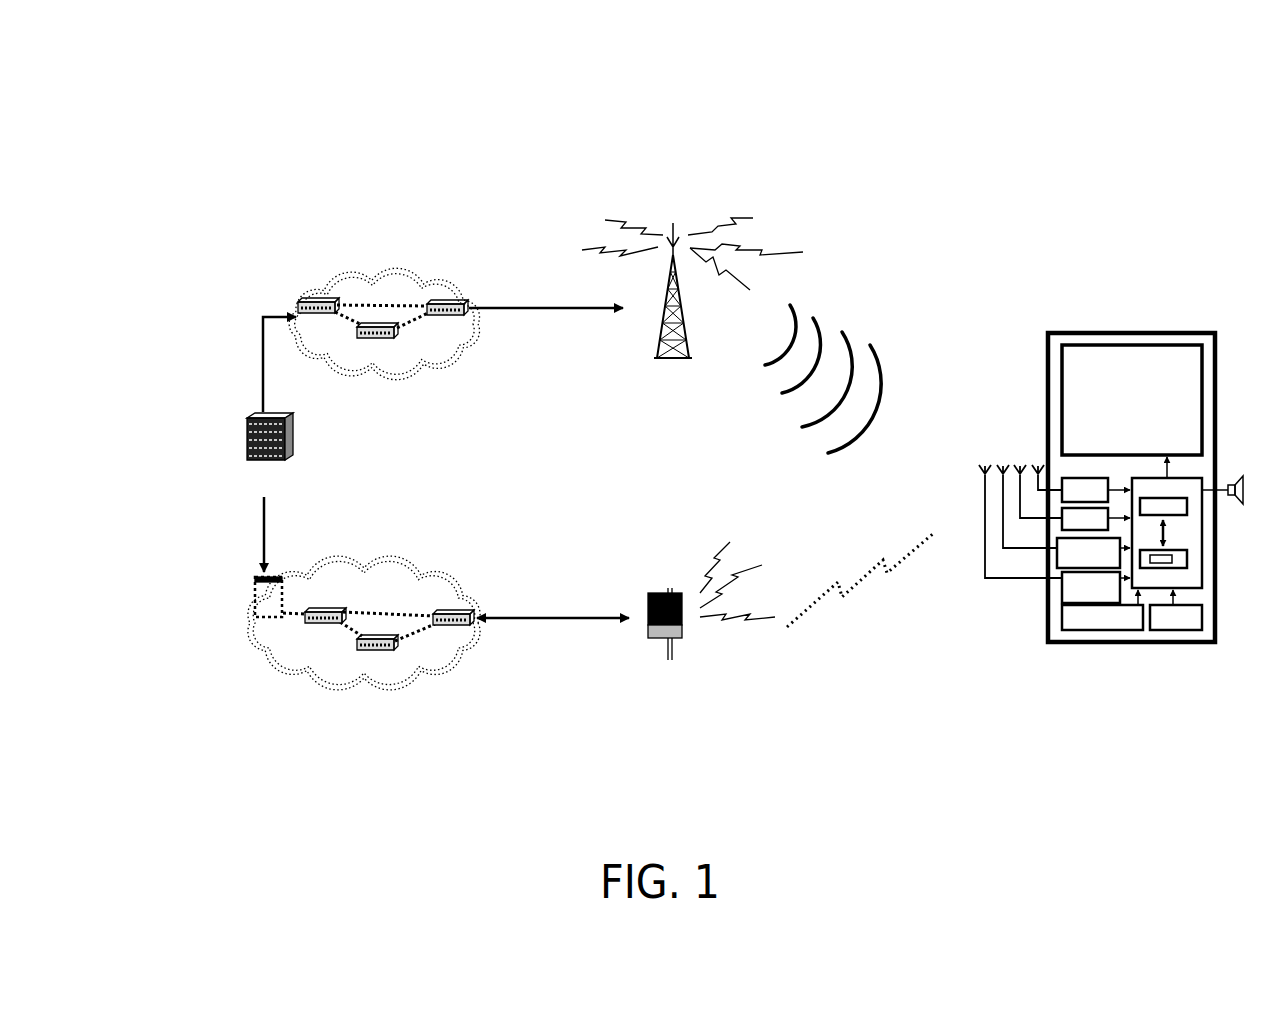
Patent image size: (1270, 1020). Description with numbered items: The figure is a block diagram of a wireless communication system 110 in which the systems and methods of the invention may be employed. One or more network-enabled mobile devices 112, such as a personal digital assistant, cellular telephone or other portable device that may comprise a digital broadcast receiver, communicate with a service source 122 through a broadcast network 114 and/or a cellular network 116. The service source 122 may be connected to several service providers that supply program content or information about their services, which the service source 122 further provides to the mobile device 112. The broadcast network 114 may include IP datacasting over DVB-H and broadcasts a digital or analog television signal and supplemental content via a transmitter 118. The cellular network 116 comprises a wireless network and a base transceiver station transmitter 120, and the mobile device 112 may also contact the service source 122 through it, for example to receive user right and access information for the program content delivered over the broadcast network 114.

The wireless communication system 110 is at (660, 123).
The mobile device 112 is at (1103, 644).
The broadcast network 114 is at (495, 337).
The cellular network 116 is at (542, 670).
The transmitter 118 is at (743, 293).
The base transceiver station transmitter 120 is at (738, 670).
The service source 122 is at (278, 460).